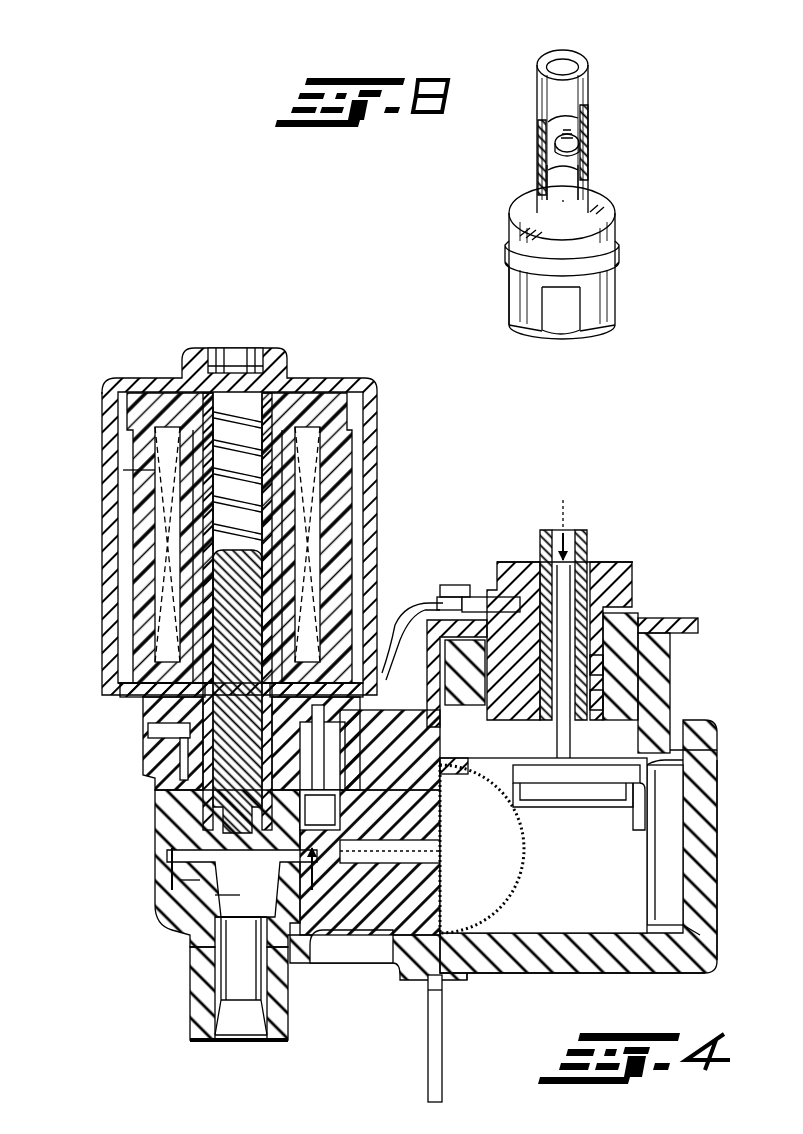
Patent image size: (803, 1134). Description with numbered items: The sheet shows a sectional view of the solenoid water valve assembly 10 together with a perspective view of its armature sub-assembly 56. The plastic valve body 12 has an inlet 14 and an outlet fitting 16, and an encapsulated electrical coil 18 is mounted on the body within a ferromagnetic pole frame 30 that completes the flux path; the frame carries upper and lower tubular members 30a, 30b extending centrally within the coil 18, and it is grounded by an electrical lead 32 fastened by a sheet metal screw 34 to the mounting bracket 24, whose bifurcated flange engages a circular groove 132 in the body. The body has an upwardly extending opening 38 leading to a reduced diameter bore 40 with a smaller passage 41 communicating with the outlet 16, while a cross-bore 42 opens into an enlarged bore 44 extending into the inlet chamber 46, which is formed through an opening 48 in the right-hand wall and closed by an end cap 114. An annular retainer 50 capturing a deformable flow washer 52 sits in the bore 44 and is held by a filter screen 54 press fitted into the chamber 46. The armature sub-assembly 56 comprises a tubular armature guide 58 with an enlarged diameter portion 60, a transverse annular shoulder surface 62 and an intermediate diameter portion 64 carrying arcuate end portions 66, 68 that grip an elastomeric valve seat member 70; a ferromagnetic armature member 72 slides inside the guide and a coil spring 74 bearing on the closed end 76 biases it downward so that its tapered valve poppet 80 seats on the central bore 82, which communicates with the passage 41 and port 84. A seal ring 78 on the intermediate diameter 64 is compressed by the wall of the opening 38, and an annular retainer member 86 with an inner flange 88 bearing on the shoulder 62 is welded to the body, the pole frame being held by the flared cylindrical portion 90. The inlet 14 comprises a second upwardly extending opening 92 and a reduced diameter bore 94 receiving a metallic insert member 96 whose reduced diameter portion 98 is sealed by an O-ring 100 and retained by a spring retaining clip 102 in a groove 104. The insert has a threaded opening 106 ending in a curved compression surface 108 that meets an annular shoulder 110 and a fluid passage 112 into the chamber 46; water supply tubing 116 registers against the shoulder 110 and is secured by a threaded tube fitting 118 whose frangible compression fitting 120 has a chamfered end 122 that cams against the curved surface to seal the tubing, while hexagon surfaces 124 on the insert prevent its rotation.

In FIG. 4, the valve assembly 10 is at (124, 360).
In FIG. 4, the valve body 12 is at (158, 832).
In FIG. 4, the inlet 14 is at (590, 520).
In FIG. 4, the outlet fitting 16 is at (238, 1048).
In FIG. 4, the encapsulated electrical coil 18 is at (135, 470).
In FIG. 4, the valve mounting bracket 24 is at (444, 1055).
In FIG. 4, the pole frame 30 is at (378, 452).
In FIG. 4, the upper tubular member 30a is at (190, 470).
In FIG. 4, the lower tubular member 30b is at (160, 600).
In FIG. 4, the electrical lead 32 is at (385, 655).
In FIG. 4, the sheet metal screw 34 is at (500, 600).
In FIG. 4, the upwardly extending opening 38 is at (150, 735).
In FIG. 4, the reduced diameter bore 40 is at (165, 812).
In FIG. 4, the smaller passage 41 is at (241, 976).
In FIG. 4, the cross-bore 42 is at (350, 770).
In FIG. 4, the enlarged bore 44 is at (442, 892).
In FIG. 4, the inlet chamber 46 is at (527, 975).
In FIG. 4, the opening 48 is at (700, 935).
In FIG. 4, the annular retainer 50 is at (390, 940).
In FIG. 4, the flow washer 52 is at (430, 858).
In FIG. 4, the filter screen 54 is at (512, 842).
In FIG. 8, the armature sub-assembly 56 is at (597, 110).
In FIG. 8, the armature guide 58 is at (537, 100).
In FIG. 4, the armature guide 58 is at (220, 570).
In FIG. 8, the enlarged diameter portion 60 is at (510, 226).
In FIG. 8, the annular shoulder surface 62 is at (525, 203).
In FIG. 8, the intermediate diameter portion 64 is at (509, 276).
In FIG. 8, the arcuate end portion 66 is at (603, 326).
In FIG. 4, the arcuate end portion 66 is at (322, 800).
In FIG. 8, the arcuate end portion 68 is at (520, 326).
In FIG. 4, the arcuate end portion 68 is at (185, 884).
In FIG. 8, the valve seat member 70 is at (561, 334).
In FIG. 4, the valve seat member 70 is at (230, 897).
In FIG. 8, the armature member 72 is at (548, 165).
In FIG. 4, the armature member 72 is at (228, 637).
In FIG. 8, the coil spring 74 is at (580, 136).
In FIG. 8, the closed end 76 is at (565, 64).
In FIG. 8, the seal ring 78 is at (620, 252).
In FIG. 4, the seal ring 78 is at (180, 770).
In FIG. 4, the valve poppet 80 is at (210, 925).
In FIG. 4, the central bore 82 is at (200, 856).
In FIG. 4, the port 84 is at (225, 1042).
In FIG. 4, the annular retainer member 86 is at (140, 697).
In FIG. 4, the flange 88 is at (322, 747).
In FIG. 4, the cylindrical portion 90 is at (240, 348).
In FIG. 4, the second upwardly extending opening 92 is at (665, 647).
In FIG. 4, the reduced diameter bore 94 is at (559, 677).
In FIG. 4, the insert member 96 is at (480, 600).
In FIG. 4, the reduced diameter portion 98 is at (655, 782).
In FIG. 4, the O-ring 100 is at (700, 748).
In FIG. 4, the spring retaining clip 102 is at (637, 828).
In FIG. 4, the groove 104 is at (462, 780).
In FIG. 4, the threaded opening 106 is at (625, 630).
In FIG. 4, the compression surface 108 is at (605, 665).
In FIG. 4, the annular shoulder 110 is at (470, 727).
In FIG. 4, the fluid passage 112 is at (566, 808).
In FIG. 4, the end cap 114 is at (718, 900).
In FIG. 4, the water supply tubing 116 is at (588, 545).
In FIG. 4, the tube fitting 118 is at (497, 560).
In FIG. 4, the compression fitting 120 is at (455, 670).
In FIG. 4, the chamfered end 122 is at (605, 700).
In FIG. 4, the hexagon 124 is at (650, 620).
In FIG. 4, the circular groove 132 is at (444, 1005).